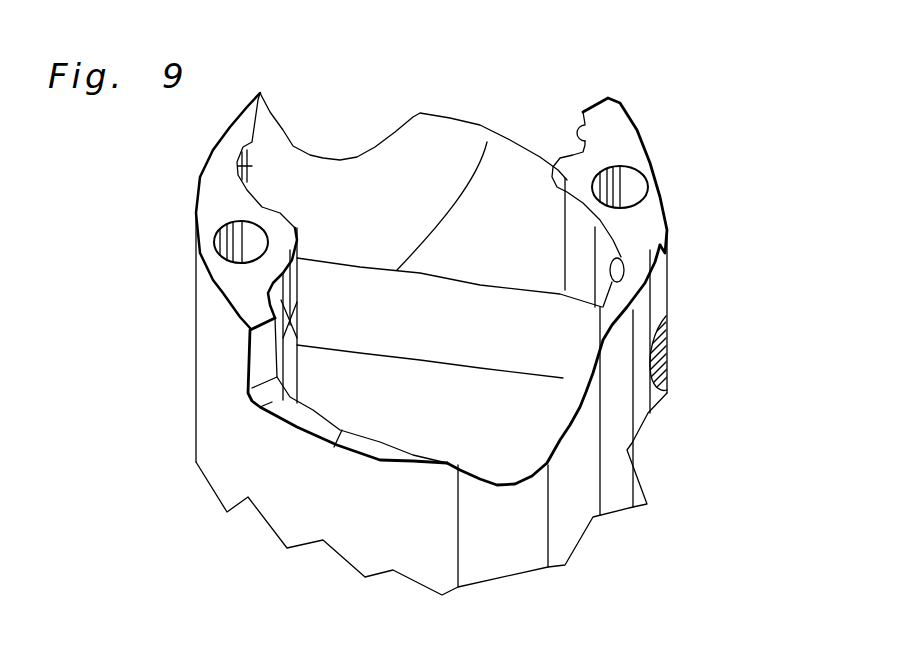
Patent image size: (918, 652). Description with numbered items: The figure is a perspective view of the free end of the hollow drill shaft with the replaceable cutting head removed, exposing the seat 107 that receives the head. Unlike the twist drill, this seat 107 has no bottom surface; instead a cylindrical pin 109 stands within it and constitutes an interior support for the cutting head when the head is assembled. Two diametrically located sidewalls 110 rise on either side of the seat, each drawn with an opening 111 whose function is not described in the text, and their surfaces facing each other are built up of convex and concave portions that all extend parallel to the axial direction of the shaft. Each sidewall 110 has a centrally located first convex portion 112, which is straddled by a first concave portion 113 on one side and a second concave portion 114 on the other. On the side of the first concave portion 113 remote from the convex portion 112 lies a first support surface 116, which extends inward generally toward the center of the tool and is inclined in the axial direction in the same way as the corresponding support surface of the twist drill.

The seat 107 is at (513, 190).
The cylindrical pin 109 is at (548, 338).
The sidewall 110 is at (221, 189).
The hole 111 is at (227, 243).
The first convex portion 112 is at (297, 222).
The first concave portion 113 is at (297, 347).
The second concave portion 114 is at (240, 170).
The first support surface 116 is at (258, 358).